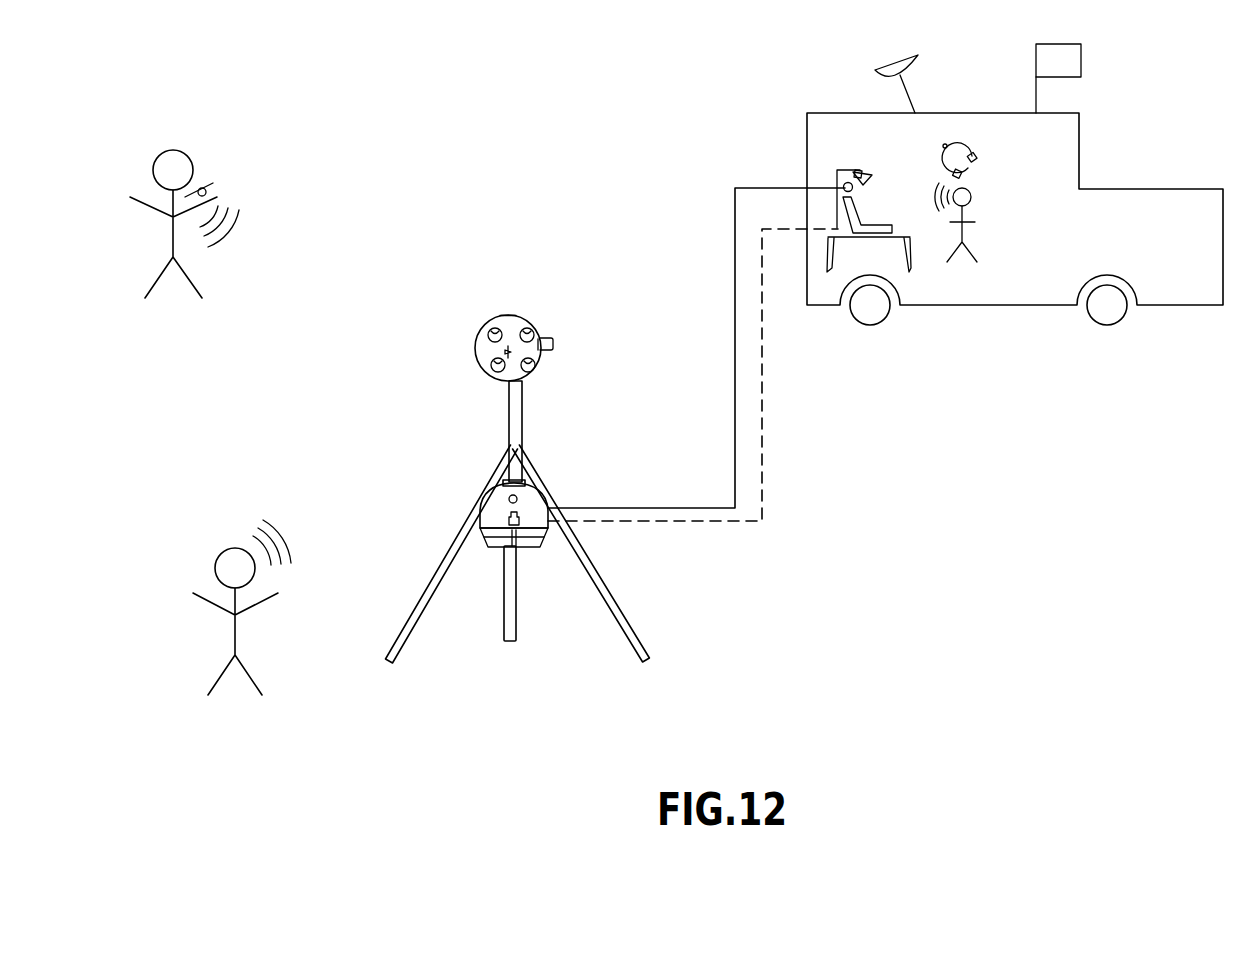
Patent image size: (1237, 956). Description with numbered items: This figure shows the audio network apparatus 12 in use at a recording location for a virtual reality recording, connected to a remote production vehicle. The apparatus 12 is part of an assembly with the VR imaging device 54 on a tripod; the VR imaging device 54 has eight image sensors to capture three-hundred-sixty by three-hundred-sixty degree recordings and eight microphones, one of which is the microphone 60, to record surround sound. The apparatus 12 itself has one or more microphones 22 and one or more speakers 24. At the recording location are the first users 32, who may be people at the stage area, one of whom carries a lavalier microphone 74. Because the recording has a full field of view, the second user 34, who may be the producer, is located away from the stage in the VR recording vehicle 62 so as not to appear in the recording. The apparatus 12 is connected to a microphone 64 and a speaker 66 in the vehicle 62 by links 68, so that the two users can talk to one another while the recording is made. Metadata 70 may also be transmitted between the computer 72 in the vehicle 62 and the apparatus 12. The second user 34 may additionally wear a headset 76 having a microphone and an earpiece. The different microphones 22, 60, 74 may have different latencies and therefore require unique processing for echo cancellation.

The apparatus 12 is at (490, 510).
The microphone 22 is at (509, 497).
The speaker 24 is at (478, 520).
The first user 32 is at (190, 155).
The second user 34 is at (973, 200).
The VR imaging device 54 is at (515, 315).
The microphone 60 is at (505, 352).
The VR recording vehicle 62 is at (1137, 188).
The microphone 64 is at (845, 185).
The speaker 66 is at (858, 170).
The links 68 is at (735, 272).
The metadata 70 is at (762, 453).
The computer 72 is at (874, 230).
The lavalier microphone 74 is at (208, 188).
The headset 76 is at (968, 145).